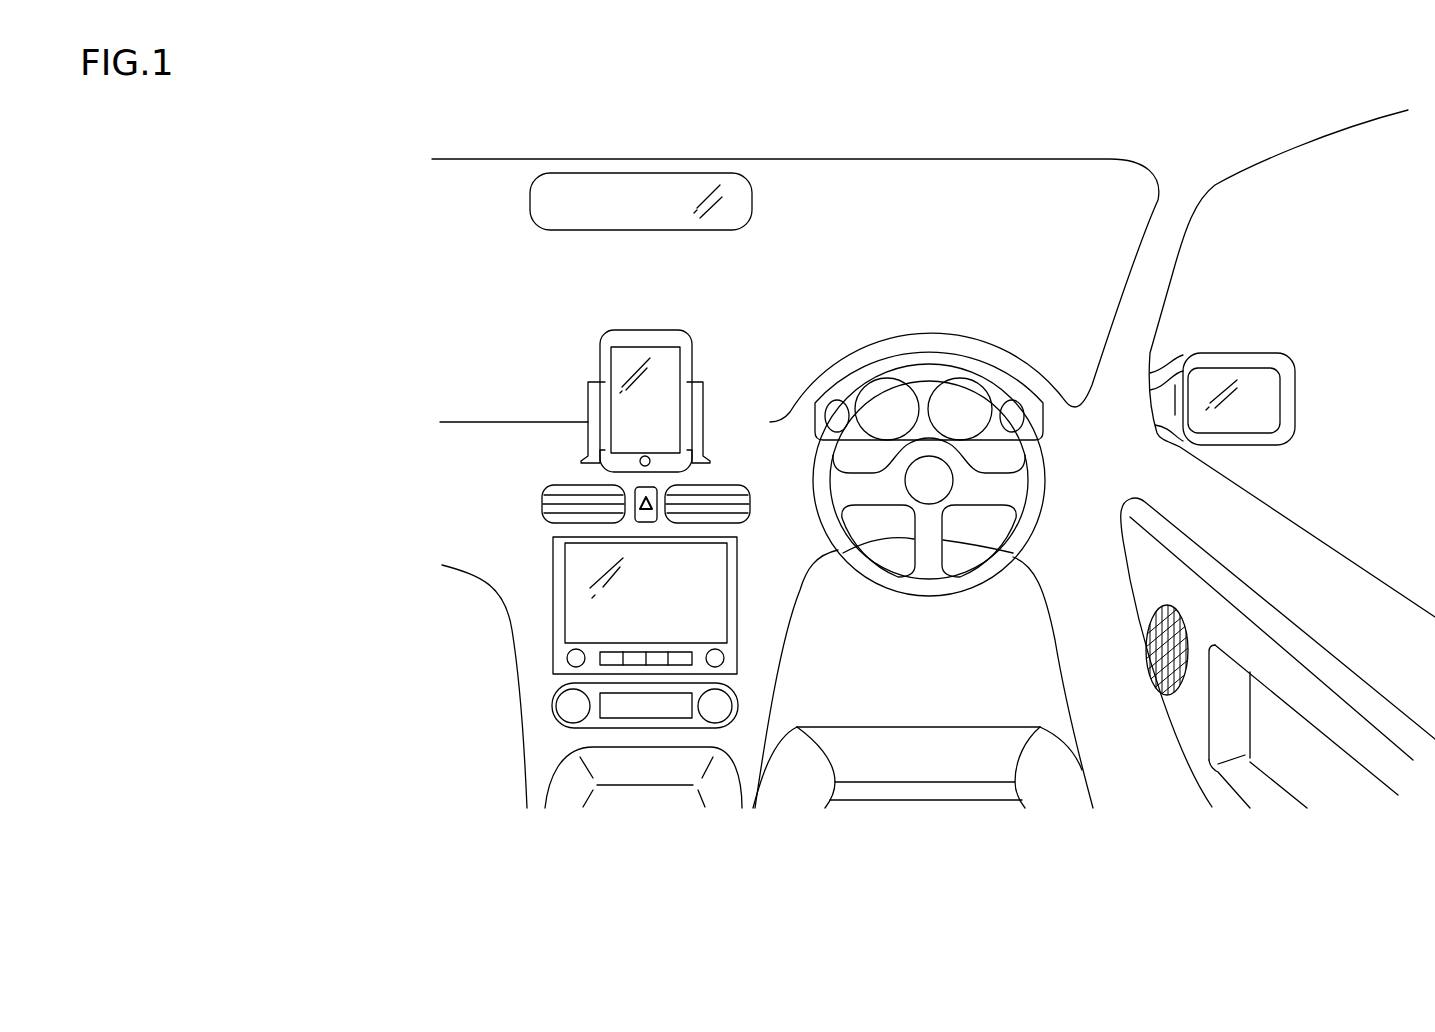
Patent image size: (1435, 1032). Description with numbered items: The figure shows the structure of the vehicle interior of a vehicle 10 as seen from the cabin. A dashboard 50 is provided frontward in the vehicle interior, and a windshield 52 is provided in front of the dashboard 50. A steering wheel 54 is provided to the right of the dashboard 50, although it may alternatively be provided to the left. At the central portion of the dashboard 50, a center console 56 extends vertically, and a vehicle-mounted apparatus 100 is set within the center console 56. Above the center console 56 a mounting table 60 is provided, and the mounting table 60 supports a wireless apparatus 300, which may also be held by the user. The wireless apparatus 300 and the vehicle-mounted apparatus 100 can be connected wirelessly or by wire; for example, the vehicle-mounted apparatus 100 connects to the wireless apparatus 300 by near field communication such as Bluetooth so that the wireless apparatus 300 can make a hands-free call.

The vehicle 10 is at (820, 906).
The dashboard 50 is at (467, 435).
The windshield 52 is at (1070, 178).
The steering wheel 54 is at (978, 378).
The center console 56 is at (523, 757).
The mounting table 60 is at (697, 398).
The vehicle-mounted apparatus 100 is at (552, 604).
The wireless apparatus 300 is at (632, 340).